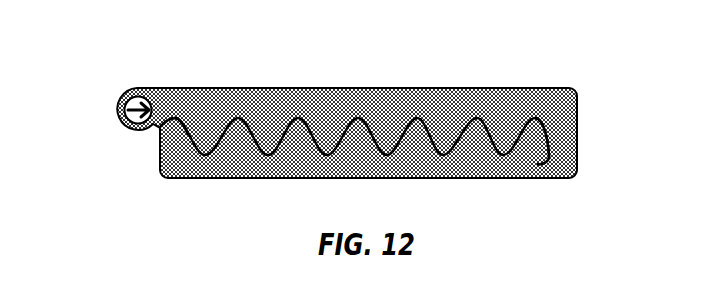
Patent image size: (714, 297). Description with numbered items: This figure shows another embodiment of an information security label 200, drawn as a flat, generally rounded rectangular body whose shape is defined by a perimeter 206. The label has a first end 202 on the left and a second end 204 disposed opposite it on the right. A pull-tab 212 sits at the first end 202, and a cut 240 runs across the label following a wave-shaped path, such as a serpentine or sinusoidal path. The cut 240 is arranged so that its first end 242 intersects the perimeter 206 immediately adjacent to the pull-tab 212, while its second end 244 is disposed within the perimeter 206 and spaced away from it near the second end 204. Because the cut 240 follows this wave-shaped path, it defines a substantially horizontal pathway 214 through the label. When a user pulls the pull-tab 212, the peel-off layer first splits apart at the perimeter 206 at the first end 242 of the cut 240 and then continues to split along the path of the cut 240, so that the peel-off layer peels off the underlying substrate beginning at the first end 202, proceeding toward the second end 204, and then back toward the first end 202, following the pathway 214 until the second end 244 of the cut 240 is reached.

The information security label 200 is at (565, 90).
The first end 202 is at (118, 112).
The second end 204 is at (577, 115).
The perimeter 206 is at (505, 90).
The pull-tab 212 is at (130, 92).
The pathway 214 is at (265, 100).
The cut 240 is at (372, 120).
The first end of cut 242 is at (172, 117).
The second end of cut 244 is at (549, 157).